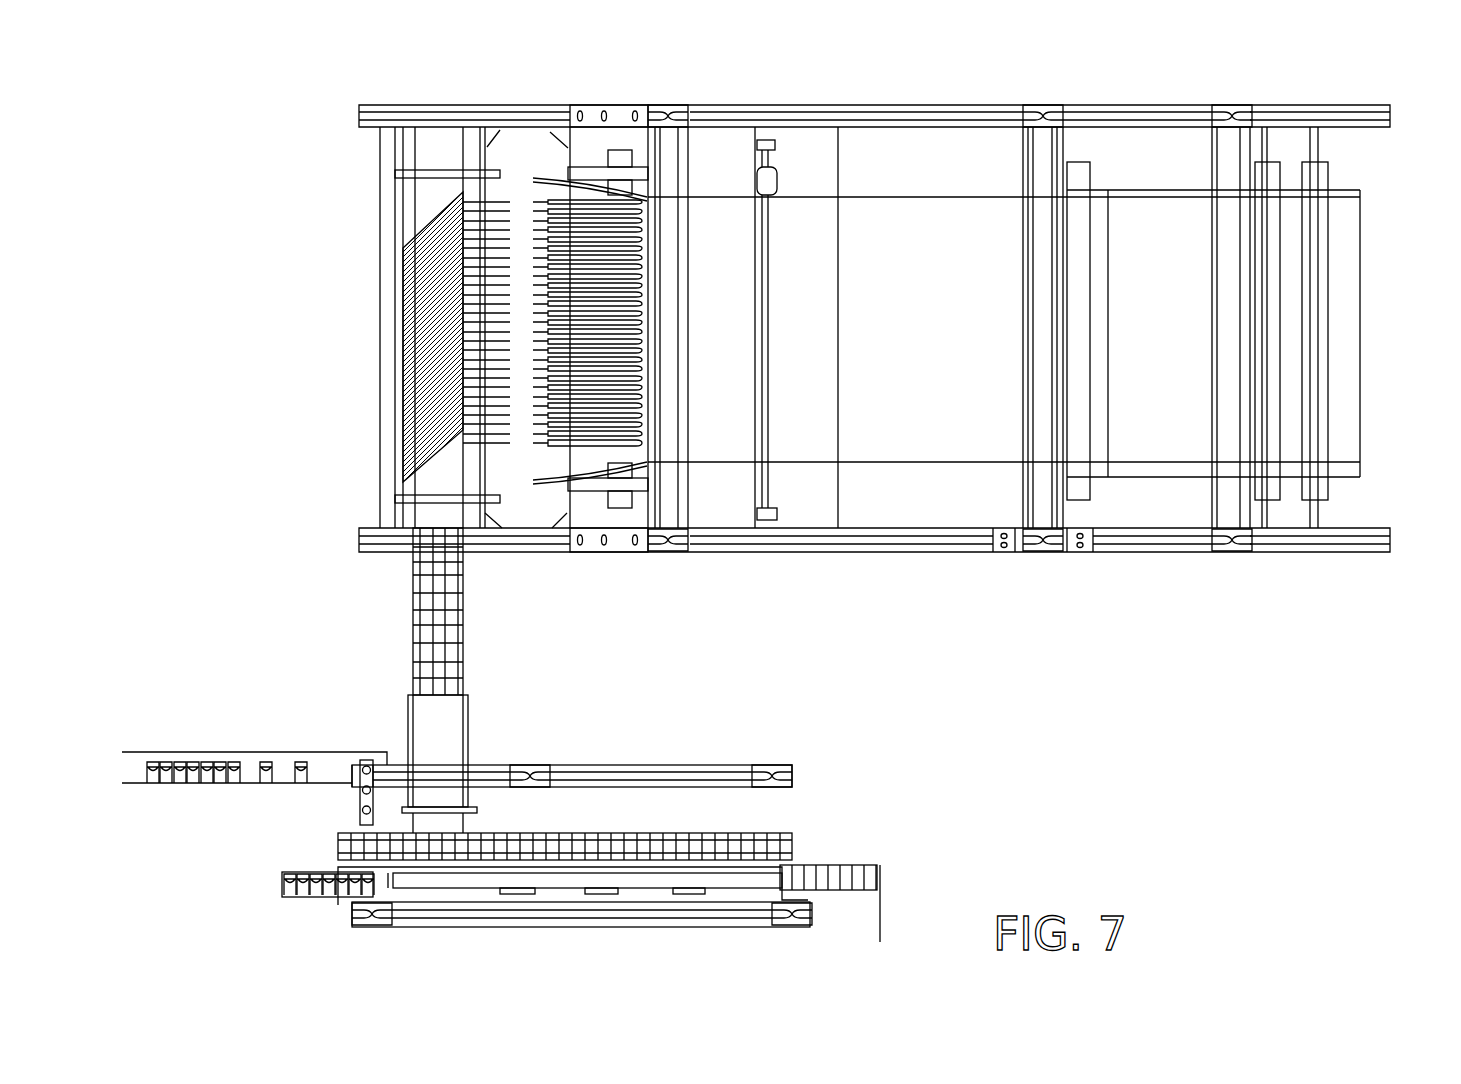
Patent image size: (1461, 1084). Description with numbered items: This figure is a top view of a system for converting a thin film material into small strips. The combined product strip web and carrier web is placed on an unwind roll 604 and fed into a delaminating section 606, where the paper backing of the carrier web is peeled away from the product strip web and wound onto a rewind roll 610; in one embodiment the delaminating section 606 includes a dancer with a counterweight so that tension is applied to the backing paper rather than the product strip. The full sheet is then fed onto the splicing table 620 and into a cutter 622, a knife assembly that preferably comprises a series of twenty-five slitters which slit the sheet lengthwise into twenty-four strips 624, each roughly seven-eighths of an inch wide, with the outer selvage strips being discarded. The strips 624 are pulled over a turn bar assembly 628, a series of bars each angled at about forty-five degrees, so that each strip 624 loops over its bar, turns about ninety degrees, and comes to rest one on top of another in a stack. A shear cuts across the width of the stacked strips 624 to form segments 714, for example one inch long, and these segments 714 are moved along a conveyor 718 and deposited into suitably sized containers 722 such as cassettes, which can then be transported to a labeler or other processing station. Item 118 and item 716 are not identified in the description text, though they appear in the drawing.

The belt 118 is at (540, 178).
The turn bar assembly 628 is at (381, 266).
The strips 624 is at (538, 452).
The cutter 622 is at (617, 553).
The splicing table 620 is at (770, 521).
The delaminating section 606 is at (1043, 553).
The unwind roll 604 is at (1272, 520).
The rewind roll 610 is at (1328, 489).
The column 716 is at (413, 633).
The segments 714 is at (450, 633).
The conveyor 718 is at (478, 677).
The containers 722 is at (298, 762).